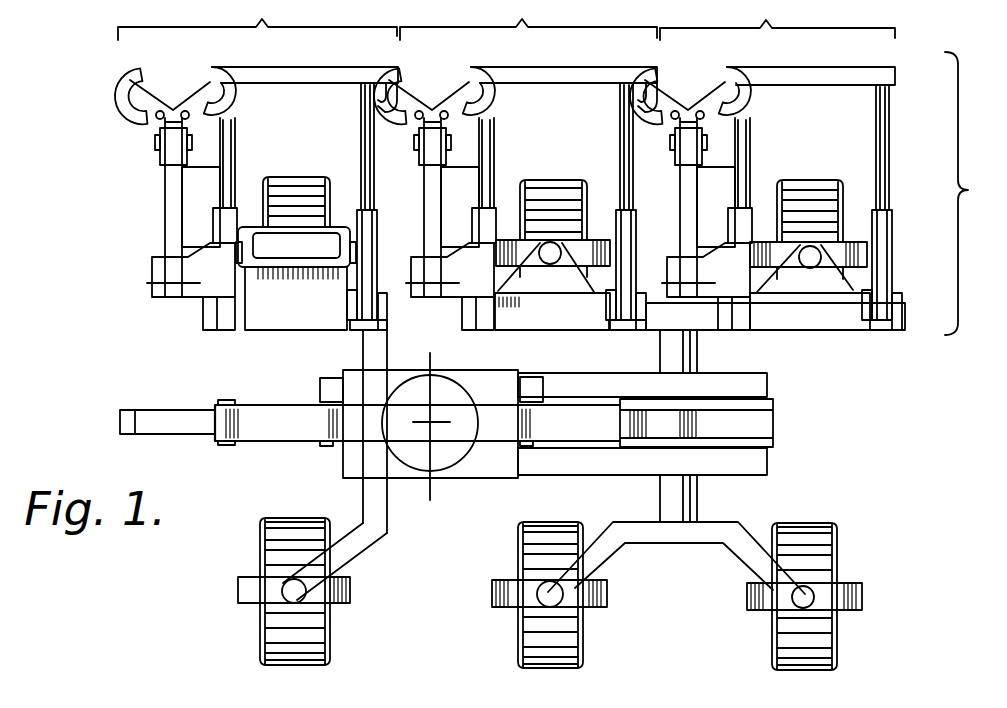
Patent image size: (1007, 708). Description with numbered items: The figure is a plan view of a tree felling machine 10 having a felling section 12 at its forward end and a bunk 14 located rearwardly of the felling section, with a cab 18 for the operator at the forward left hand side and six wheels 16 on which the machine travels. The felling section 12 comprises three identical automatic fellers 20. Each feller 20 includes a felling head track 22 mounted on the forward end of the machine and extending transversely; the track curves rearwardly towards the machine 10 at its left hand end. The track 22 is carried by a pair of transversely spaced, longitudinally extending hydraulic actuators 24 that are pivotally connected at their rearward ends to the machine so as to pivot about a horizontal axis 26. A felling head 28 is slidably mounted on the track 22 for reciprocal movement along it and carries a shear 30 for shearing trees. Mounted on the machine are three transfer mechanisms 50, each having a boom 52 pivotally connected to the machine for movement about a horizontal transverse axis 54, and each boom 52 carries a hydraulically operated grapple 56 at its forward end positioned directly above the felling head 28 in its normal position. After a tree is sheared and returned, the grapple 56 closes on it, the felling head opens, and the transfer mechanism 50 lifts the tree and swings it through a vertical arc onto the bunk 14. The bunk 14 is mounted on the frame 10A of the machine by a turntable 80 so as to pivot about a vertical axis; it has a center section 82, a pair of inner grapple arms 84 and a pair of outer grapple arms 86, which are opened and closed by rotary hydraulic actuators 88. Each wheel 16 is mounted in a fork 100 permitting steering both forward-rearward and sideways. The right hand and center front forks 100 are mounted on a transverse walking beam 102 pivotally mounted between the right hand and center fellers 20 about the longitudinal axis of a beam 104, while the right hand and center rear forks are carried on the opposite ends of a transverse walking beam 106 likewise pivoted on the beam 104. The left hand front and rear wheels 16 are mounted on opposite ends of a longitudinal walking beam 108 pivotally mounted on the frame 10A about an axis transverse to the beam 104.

The tree felling machine 10 is at (151, 329).
The frame 10A is at (753, 385).
The felling section 12 is at (970, 193).
The bunk 14 is at (773, 427).
The wheels 16 is at (301, 178).
The cab 18 is at (271, 330).
The automatic fellers 20 is at (506, 21).
The felling head track 22 is at (243, 67).
The hydraulic actuators 24 is at (234, 117).
The horizontal axis 26 is at (853, 307).
The felling head 28 is at (175, 108).
The shear 30 is at (143, 86).
The transfer mechanisms 50 is at (162, 186).
The booms 52 is at (164, 215).
The horizontal transverse axis 54 is at (137, 283).
The grapple 56 is at (137, 108).
The turntable 80 is at (434, 490).
The center section 82 is at (408, 444).
The inner grapple arms 84 is at (269, 414).
The outer grapple arms 86 is at (148, 418).
The rotary hydraulic actuators 88 is at (331, 378).
The fork 100 is at (511, 238).
The transverse walking beam 102 is at (702, 333).
The beam 104 is at (664, 354).
The transverse walking beam 106 is at (705, 544).
The longitudinal walking beam 108 is at (361, 494).